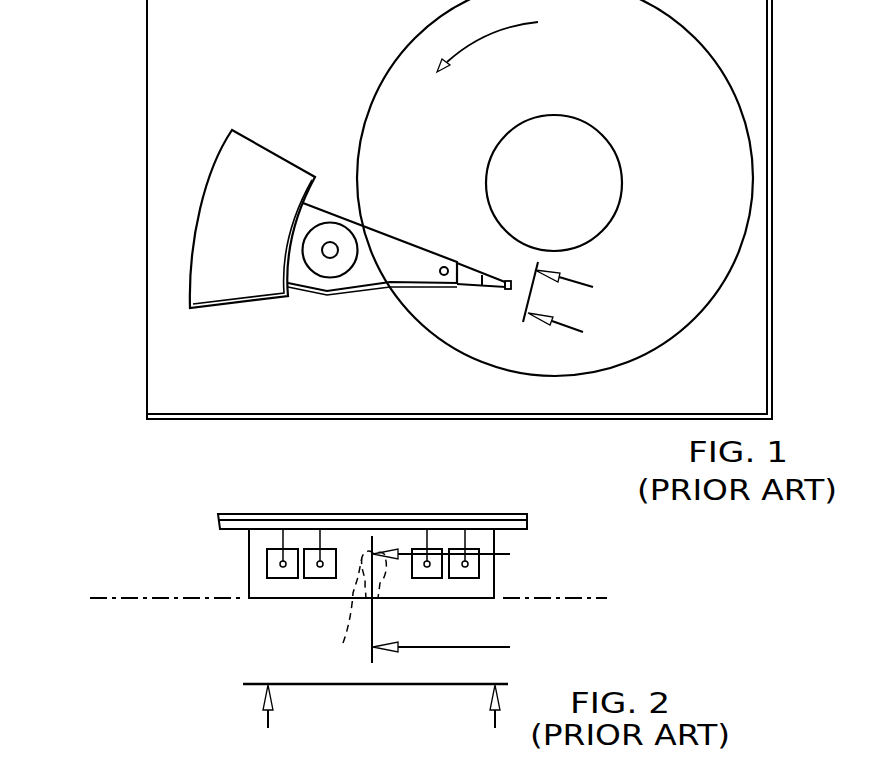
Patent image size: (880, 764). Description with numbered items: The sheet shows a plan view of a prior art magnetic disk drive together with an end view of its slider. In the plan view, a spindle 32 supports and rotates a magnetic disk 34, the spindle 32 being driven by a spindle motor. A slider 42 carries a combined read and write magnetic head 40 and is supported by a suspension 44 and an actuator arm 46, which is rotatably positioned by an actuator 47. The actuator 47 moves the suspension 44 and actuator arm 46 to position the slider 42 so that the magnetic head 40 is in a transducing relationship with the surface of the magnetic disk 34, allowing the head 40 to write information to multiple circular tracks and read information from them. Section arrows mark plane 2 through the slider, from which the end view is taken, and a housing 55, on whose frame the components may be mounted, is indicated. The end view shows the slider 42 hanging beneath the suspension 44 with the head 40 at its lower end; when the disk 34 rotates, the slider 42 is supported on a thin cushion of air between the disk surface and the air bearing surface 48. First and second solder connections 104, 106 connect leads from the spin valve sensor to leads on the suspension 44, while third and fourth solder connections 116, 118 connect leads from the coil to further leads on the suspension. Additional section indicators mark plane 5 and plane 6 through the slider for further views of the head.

In FIG. 1, the spindle 32 is at (578, 117).
In FIG. 1, the magnetic disk 34 is at (683, 183).
In FIG. 1, the magnetic head 40 is at (508, 289).
In FIG. 2, the magnetic head 40 is at (342, 636).
In FIG. 1, the slider 42 is at (509, 280).
In FIG. 2, the slider 42 is at (249, 558).
In FIG. 1, the suspension 44 is at (467, 287).
In FIG. 1, the actuator arm 46 is at (378, 227).
In FIG. 1, the actuator 47 is at (265, 147).
In FIG. 2, the air bearing surface 48 is at (137, 598).
In FIG. 2, the first solder connection 104 is at (264, 551).
In FIG. 2, the second solder connection 106 is at (447, 553).
In FIG. 2, the third solder connection 116 is at (301, 551).
In FIG. 2, the fourth solder connection 118 is at (407, 548).
In FIG. 2, the housing 55 is at (750, 763).
In FIG. 1, the plane 2- 2 is at (573, 309).
In FIG. 2, the plane 5- 5 is at (375, 724).
In FIG. 2, the plane 6- 6 is at (453, 600).